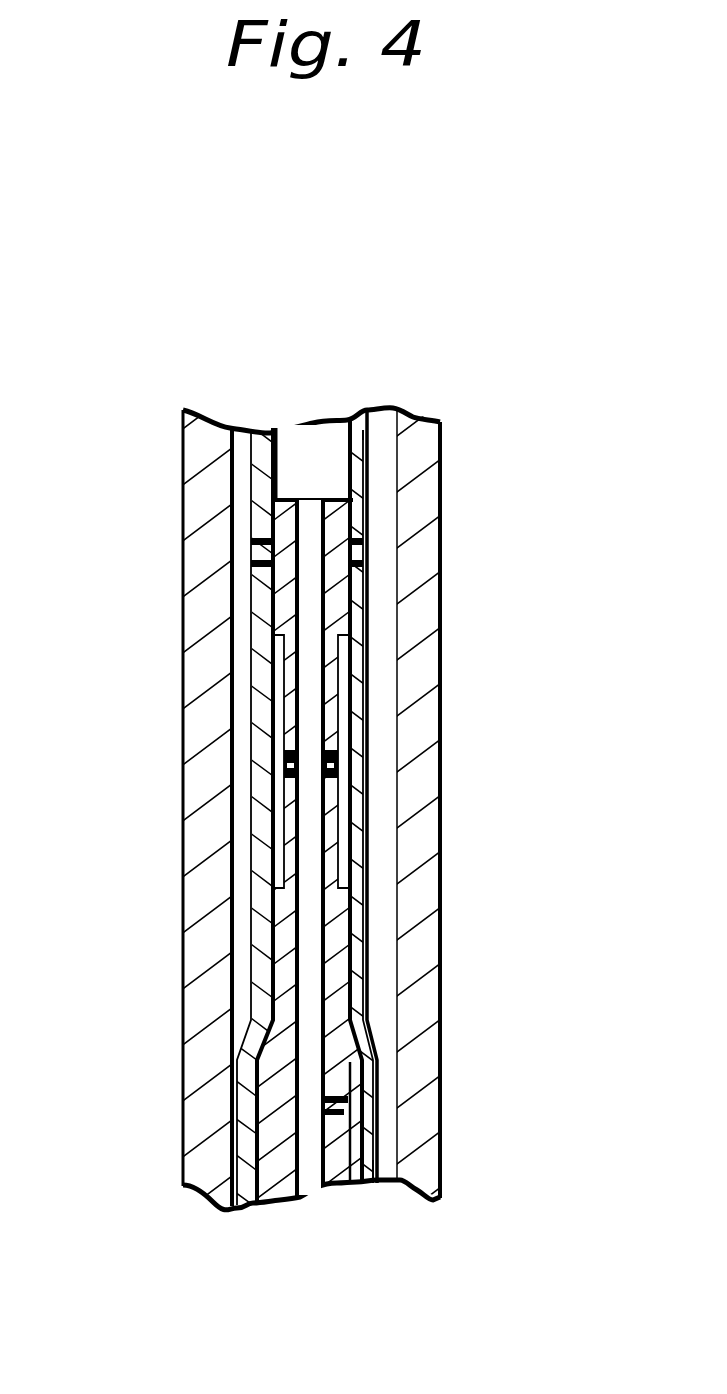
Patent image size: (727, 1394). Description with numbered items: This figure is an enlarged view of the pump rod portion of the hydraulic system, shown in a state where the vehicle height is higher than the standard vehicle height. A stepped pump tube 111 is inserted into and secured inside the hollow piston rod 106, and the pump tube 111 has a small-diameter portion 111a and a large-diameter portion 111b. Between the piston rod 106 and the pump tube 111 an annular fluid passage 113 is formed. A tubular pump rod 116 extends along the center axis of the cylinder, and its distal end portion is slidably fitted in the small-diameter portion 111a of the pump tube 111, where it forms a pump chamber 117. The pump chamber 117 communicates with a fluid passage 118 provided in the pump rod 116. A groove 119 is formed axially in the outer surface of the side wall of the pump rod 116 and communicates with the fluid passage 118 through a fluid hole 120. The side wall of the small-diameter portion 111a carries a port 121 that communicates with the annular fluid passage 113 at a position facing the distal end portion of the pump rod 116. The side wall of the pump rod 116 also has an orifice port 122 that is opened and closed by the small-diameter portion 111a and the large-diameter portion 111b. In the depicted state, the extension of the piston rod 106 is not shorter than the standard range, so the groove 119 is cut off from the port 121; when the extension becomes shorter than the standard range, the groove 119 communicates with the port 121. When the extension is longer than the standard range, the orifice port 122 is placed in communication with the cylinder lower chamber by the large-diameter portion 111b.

The piston rod 106 is at (203, 438).
The pump tube 111 is at (352, 441).
The small-diameter portion 111a is at (400, 416).
The large-diameter portion 111b is at (352, 1153).
The annular fluid passage 113 is at (240, 790).
The pump rod 116 is at (342, 578).
The pump chamber 117 is at (313, 440).
The fluid passage 118 is at (306, 1178).
The groove 119 is at (343, 826).
The fluid hole 120 is at (330, 765).
The port 121 is at (258, 560).
The orifice port 122 is at (350, 1100).